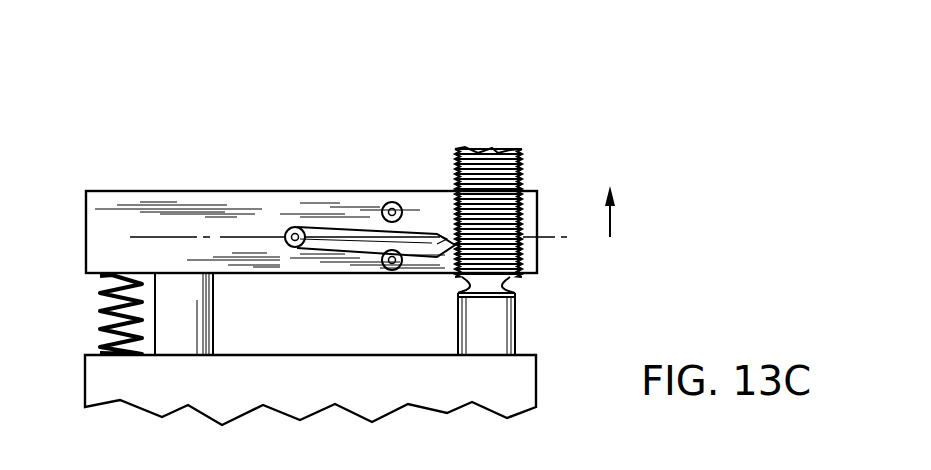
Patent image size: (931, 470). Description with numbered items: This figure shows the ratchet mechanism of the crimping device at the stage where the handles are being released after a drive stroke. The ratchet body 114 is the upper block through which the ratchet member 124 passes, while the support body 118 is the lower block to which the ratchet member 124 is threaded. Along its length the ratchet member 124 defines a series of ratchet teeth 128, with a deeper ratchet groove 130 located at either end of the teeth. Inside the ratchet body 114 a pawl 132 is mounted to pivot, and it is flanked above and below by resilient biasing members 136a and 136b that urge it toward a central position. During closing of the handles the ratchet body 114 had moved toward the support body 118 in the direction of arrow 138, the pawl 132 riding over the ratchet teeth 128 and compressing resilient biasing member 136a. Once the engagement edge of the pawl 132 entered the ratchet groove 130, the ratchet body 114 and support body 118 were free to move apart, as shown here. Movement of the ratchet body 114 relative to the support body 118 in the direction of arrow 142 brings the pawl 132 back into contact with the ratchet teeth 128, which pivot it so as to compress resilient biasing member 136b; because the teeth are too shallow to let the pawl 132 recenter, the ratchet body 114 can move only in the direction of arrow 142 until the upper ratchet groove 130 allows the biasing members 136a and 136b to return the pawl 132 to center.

The ratchet body 114 is at (212, 201).
The support body 118 is at (522, 392).
The ratchet member 124 is at (513, 332).
The ratchet teeth 128 is at (523, 173).
The ratchet groove 130 is at (513, 284).
The pawl 132 is at (311, 230).
The resilient biasing member 136a is at (393, 202).
The resilient biasing member 136b is at (392, 272).
The arrow 138 is at (104, 330).
The arrow 142 is at (612, 222).